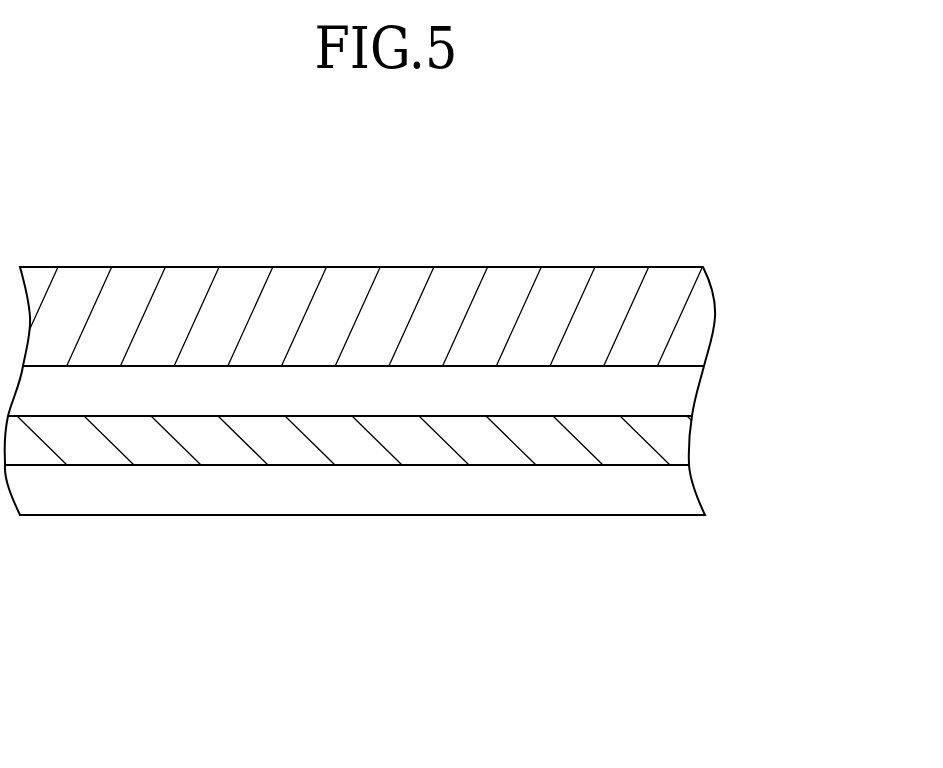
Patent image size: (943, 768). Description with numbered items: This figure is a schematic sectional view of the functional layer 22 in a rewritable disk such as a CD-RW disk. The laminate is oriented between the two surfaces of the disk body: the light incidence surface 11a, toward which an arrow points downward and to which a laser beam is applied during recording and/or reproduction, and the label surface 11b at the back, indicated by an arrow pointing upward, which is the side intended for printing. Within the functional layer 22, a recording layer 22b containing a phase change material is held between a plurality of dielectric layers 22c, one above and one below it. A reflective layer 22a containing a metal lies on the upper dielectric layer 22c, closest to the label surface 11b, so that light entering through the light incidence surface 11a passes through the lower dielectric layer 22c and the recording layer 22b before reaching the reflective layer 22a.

The functional layer 22 is at (718, 133).
The reflective layer 22a is at (680, 327).
The recording layer 22b is at (668, 443).
The dielectric layers 22c is at (677, 398).
The label surface 11b is at (383, 253).
The light incidence surface 11a is at (383, 533).